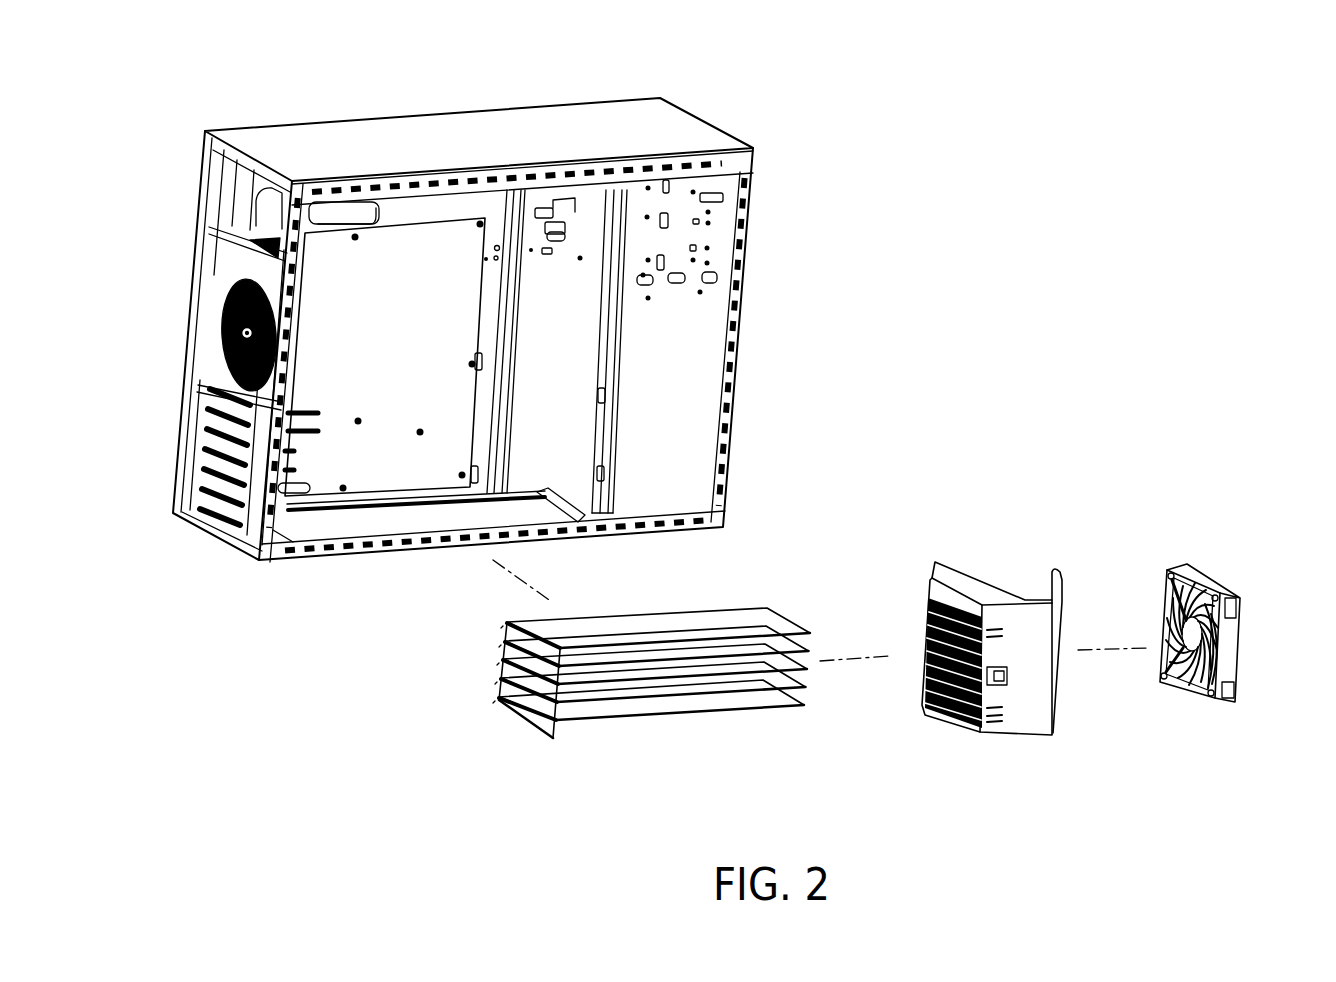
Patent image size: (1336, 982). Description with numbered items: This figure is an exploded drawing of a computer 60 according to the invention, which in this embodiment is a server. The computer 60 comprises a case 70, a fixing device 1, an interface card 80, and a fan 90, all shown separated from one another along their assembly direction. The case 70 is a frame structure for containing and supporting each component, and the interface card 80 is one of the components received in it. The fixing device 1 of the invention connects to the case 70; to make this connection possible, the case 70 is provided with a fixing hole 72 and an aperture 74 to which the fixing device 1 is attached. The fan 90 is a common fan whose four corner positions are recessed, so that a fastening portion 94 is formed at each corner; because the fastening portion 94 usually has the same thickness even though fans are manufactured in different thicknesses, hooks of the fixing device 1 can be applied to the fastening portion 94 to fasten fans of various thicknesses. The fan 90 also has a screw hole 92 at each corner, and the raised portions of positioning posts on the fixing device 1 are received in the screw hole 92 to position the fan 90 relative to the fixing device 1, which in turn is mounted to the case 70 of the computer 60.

The computer 60 is at (157, 105).
The case 70 is at (400, 128).
The fixing hole 72 is at (474, 360).
The aperture 74 is at (601, 391).
The interface card 80 is at (655, 712).
The fixing device 1 is at (1023, 728).
The fan 90 is at (1232, 665).
The screw hole 92 is at (1172, 573).
The fastening portion 94 is at (1216, 700).